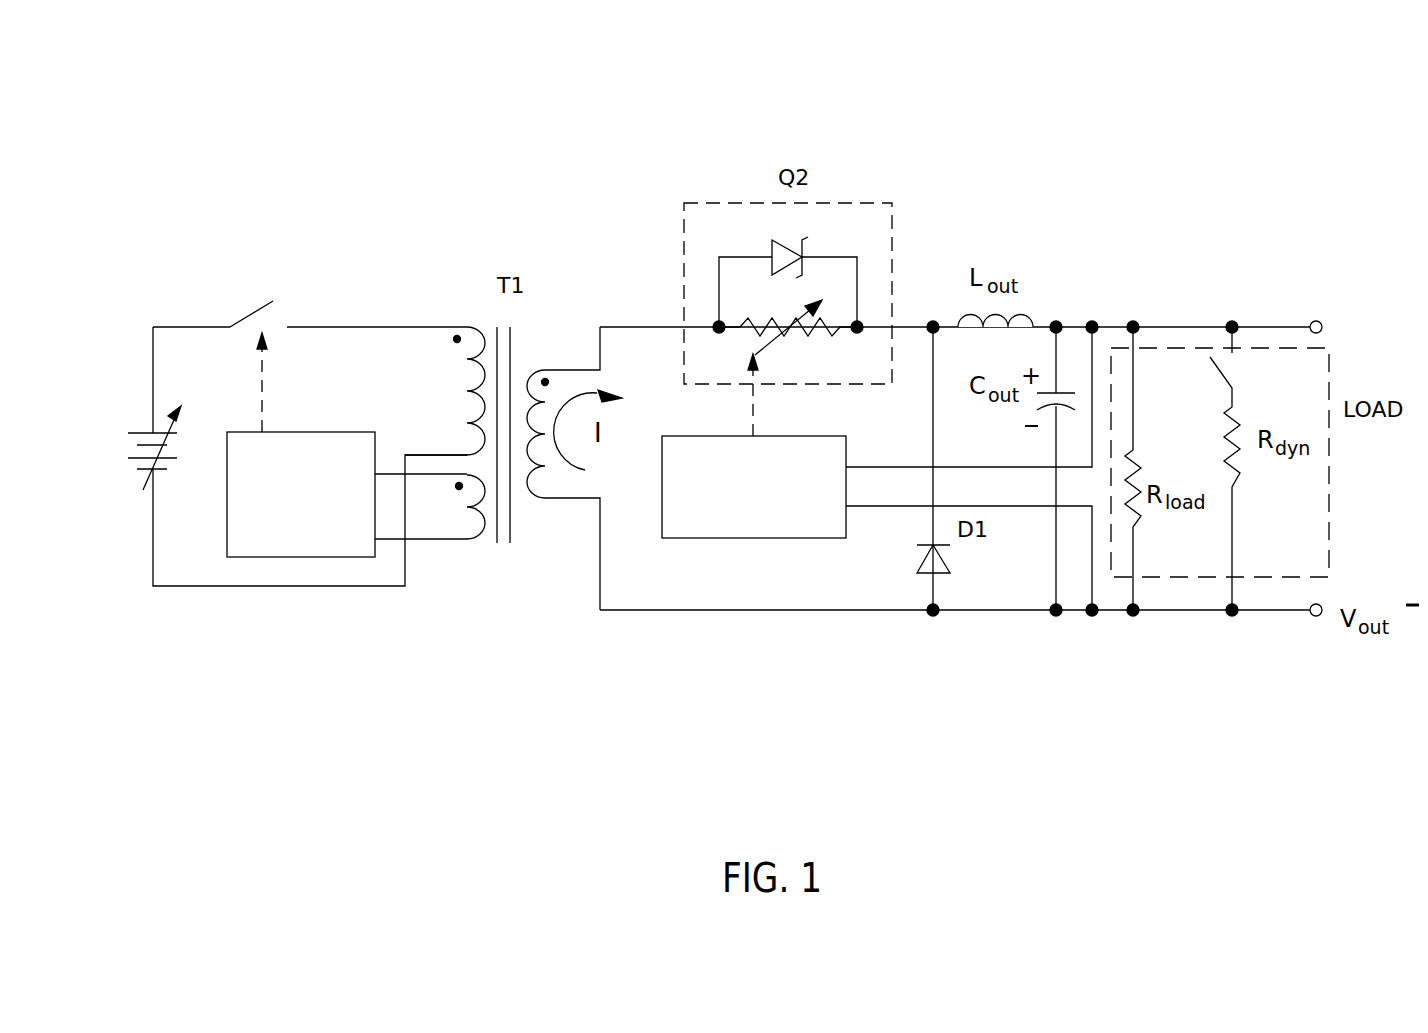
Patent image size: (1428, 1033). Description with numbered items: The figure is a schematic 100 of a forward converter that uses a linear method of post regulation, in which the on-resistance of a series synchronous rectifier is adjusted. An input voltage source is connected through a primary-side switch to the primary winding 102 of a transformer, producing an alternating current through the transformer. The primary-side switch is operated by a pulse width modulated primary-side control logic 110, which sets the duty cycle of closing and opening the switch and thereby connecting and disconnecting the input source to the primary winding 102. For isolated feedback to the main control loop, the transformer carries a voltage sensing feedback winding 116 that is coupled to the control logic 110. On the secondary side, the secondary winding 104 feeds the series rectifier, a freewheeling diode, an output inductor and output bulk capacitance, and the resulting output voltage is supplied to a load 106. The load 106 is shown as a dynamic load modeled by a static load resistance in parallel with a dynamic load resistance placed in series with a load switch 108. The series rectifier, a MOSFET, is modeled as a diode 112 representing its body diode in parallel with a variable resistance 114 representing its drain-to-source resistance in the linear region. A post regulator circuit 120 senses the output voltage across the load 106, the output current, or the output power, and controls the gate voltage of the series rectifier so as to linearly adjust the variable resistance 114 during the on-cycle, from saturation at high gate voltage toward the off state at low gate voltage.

The schematic 100 is at (311, 170).
The primary winding 102 is at (478, 327).
The secondary winding 104 is at (527, 370).
The load 106 is at (1273, 346).
The load switch 108 is at (1218, 373).
The pulse width modulated primary-side control logic 110 is at (355, 430).
The diode 112 is at (806, 255).
The variable resistance 114 is at (770, 325).
The voltage sensing feedback winding 116 is at (475, 545).
The post regulator circuit 120 is at (765, 538).